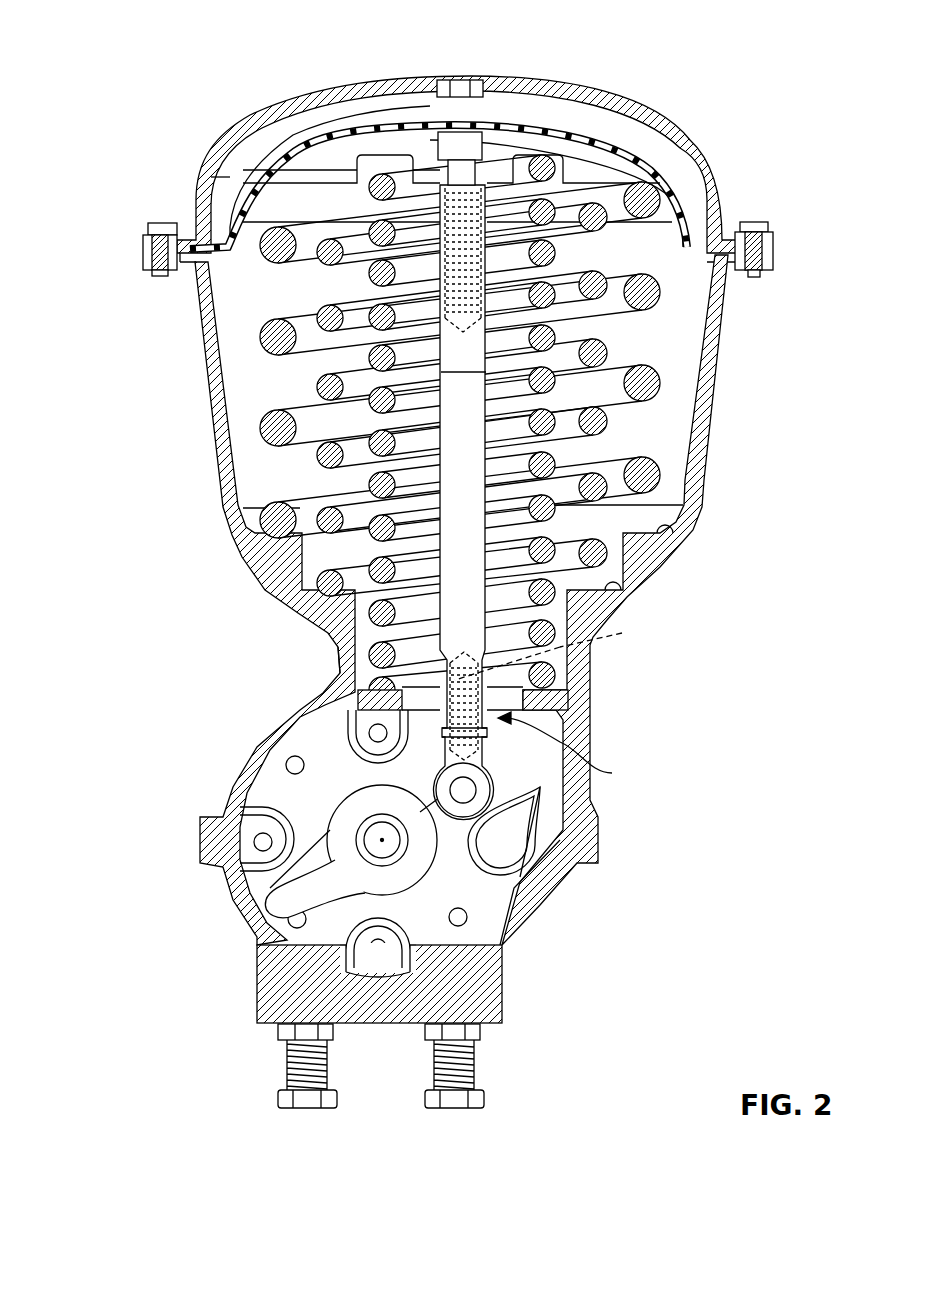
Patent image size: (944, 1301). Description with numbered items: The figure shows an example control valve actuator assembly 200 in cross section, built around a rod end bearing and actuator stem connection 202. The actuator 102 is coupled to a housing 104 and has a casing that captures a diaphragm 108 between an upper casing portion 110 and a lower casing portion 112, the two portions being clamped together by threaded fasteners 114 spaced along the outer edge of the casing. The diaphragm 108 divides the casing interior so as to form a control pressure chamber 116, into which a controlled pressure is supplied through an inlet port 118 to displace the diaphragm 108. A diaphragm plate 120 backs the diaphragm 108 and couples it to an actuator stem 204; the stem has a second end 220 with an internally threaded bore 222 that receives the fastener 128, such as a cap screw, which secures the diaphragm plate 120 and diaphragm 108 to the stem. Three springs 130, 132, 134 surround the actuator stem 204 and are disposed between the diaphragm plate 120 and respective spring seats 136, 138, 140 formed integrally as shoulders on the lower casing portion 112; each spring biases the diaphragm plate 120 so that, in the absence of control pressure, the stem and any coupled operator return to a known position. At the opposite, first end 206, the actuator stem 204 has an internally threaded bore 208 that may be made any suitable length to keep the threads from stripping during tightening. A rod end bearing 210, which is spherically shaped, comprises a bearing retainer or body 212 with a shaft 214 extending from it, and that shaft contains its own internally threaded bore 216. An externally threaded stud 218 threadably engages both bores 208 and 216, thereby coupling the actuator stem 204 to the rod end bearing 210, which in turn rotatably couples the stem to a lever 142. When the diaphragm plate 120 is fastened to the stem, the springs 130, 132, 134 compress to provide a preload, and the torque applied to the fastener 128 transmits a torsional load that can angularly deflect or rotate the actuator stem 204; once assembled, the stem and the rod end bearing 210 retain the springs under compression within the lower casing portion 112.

The actuator 102 is at (742, 127).
The housing 104 is at (598, 850).
The diaphragm 108 is at (440, 148).
The upper casing portion 110 is at (596, 105).
The lower casing portion 112 is at (718, 396).
The threaded fasteners 114 is at (160, 278).
The control pressure chamber 116 is at (546, 117).
The inlet port 118 is at (458, 78).
The diaphragm plate 120 is at (340, 157).
The fastener 128 is at (378, 150).
The spring 130 is at (370, 280).
The spring 132 is at (318, 384).
The spring 134 is at (280, 263).
The spring seat 136 is at (562, 675).
The spring seat 138 is at (622, 583).
The spring seat 140 is at (665, 527).
The lever 142 is at (345, 800).
The actuator assembly 200 is at (138, 36).
The rod end bearing and actuator stem connection 202 is at (578, 749).
The actuator stem 204 is at (464, 502).
The first end 206 is at (395, 686).
The internally threaded bore 208 is at (467, 685).
The rod end bearing 210 is at (453, 820).
The bearing retainer 212 is at (537, 795).
The shaft 214 is at (430, 758).
The internally threaded bore 216 is at (488, 766).
The externally threaded stud 218 is at (559, 650).
The second end 220 is at (268, 117).
The internally threaded bore 222 is at (487, 187).